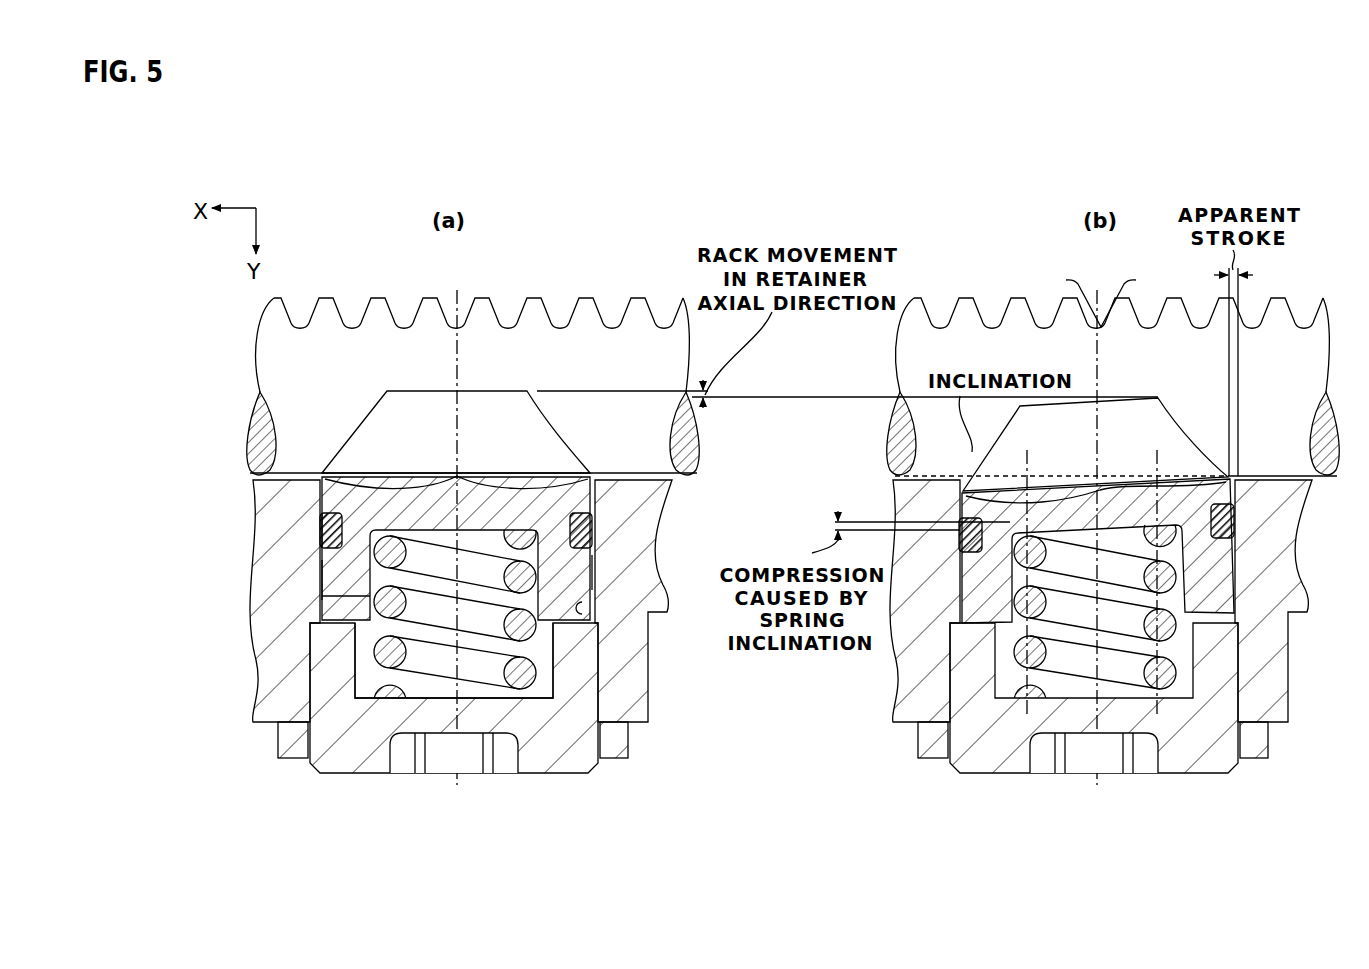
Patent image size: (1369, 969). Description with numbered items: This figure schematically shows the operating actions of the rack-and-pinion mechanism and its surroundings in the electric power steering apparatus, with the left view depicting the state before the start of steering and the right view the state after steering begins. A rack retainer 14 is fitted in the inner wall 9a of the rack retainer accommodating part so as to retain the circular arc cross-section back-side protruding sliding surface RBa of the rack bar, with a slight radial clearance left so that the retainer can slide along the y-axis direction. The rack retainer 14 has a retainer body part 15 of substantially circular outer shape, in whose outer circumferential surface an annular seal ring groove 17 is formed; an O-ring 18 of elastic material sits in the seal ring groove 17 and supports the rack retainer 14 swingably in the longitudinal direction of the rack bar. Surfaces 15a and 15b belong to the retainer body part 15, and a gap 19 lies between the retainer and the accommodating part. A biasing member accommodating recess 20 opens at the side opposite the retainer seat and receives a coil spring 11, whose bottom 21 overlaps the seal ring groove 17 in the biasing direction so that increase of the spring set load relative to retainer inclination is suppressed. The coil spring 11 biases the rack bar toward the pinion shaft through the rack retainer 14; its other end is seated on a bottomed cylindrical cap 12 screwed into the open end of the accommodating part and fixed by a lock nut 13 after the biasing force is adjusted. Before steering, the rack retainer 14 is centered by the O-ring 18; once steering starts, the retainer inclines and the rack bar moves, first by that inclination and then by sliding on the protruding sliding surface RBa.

The bottom of biasing member accommodating recess 21 is at (402, 398).
The upper contact surface of retainer 15b is at (594, 472).
The retainer body part 15 is at (369, 413).
The protruding sliding surface RBa is at (300, 428).
The O-ring 18 is at (322, 532).
The seal ring groove 17 is at (317, 537).
The outer peripheral surface of retainer 15a is at (322, 578).
The biasing member accommodating recess 20 is at (322, 597).
The coil spring 11 is at (312, 648).
The lock nut 13 is at (295, 740).
The rack retainer 14 is at (296, 781).
The cap 12 is at (567, 748).
The gap between retainer and housing 19 is at (598, 571).
The inner wall of rack retainer accommodating part 9a is at (584, 604).